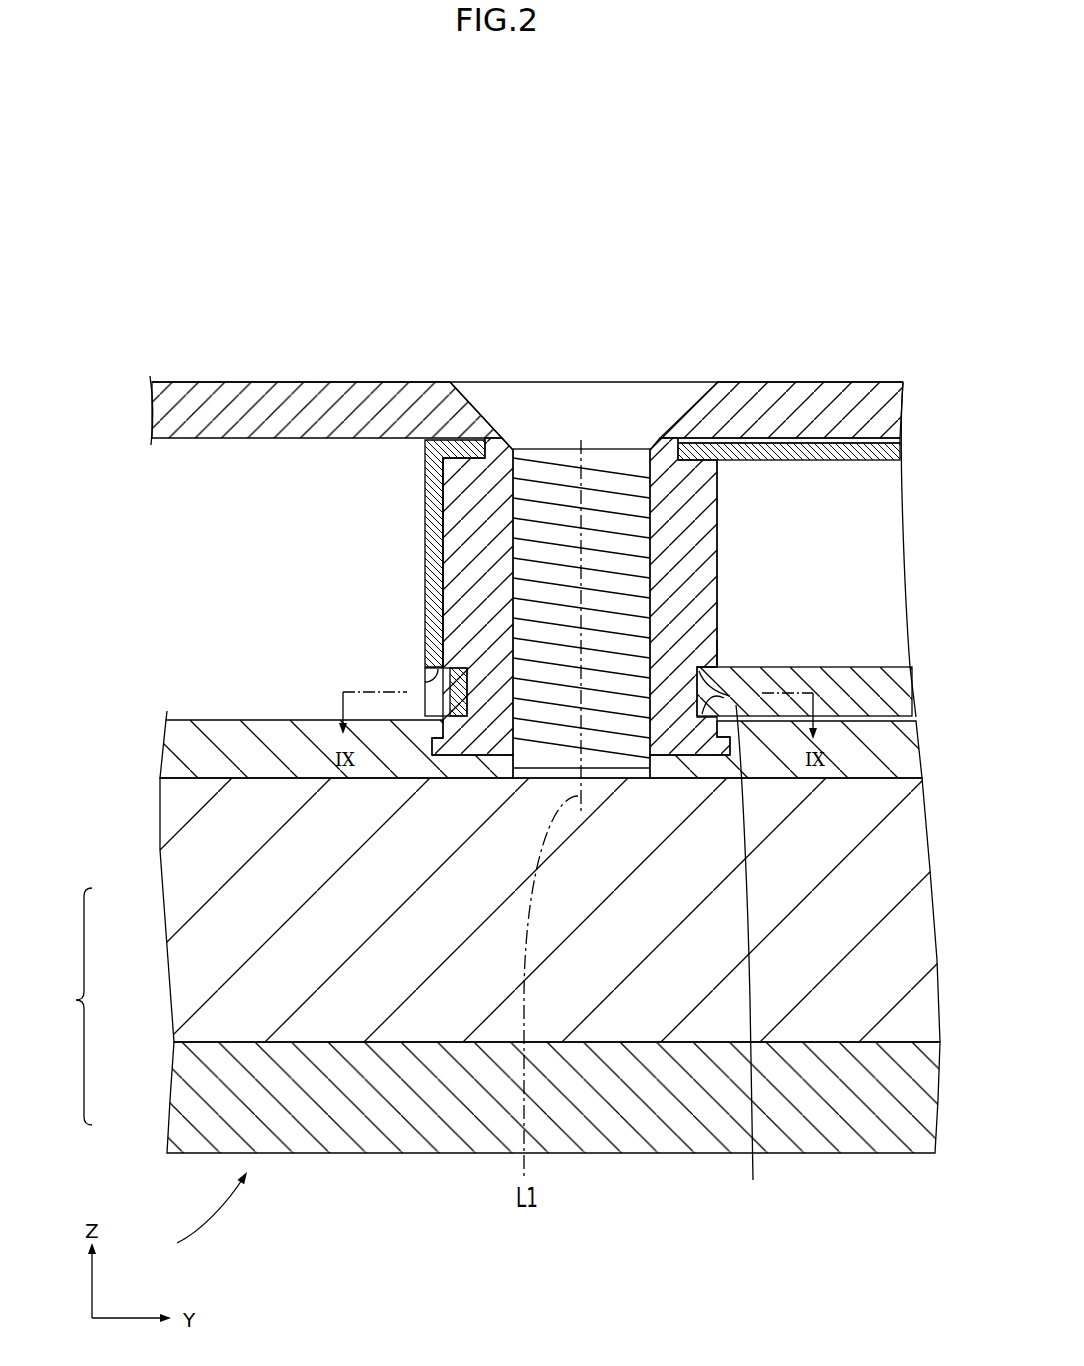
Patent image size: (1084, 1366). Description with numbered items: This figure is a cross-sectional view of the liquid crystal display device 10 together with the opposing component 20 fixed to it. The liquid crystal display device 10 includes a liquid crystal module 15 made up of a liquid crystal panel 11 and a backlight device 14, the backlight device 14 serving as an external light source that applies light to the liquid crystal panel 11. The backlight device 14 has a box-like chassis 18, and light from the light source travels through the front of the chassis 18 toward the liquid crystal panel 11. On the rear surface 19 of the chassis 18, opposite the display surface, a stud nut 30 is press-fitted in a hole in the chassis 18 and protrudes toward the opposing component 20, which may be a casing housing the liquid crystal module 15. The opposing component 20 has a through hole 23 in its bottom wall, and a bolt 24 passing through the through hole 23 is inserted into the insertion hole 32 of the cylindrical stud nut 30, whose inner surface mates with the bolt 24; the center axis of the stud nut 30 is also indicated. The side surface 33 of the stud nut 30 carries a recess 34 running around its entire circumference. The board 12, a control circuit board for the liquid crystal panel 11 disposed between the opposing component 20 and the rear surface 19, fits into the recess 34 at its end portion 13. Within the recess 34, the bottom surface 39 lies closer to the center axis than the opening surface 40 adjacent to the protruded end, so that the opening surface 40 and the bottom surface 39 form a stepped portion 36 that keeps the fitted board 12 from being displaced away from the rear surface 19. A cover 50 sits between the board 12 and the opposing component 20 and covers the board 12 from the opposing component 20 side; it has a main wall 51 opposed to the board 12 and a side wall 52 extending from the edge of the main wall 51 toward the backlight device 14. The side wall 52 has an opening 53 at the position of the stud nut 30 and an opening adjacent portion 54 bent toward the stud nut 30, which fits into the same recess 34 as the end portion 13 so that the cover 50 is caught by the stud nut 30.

The liquid crystal display device 10 is at (197, 1217).
The liquid crystal panel 11 is at (188, 1097).
The board 12 is at (898, 665).
The end portion 13 is at (825, 781).
The backlight device 14 is at (175, 894).
The liquid crystal module 15 is at (84, 1000).
The chassis 18 is at (188, 753).
The rear surface 19 is at (912, 702).
The opposing component 20 is at (253, 413).
The through hole 23 is at (683, 418).
The bolt 24 is at (537, 381).
The stud nut 30 is at (695, 482).
The insertion hole 32 is at (527, 560).
The side surface 33 is at (425, 503).
The recess 34 is at (753, 959).
The stepped portion 36 is at (712, 675).
The bottom surface 39 is at (715, 690).
The opening surface 40 is at (723, 643).
The cover 50 is at (803, 453).
The main wall 51 is at (757, 447).
The side wall 52 is at (425, 570).
The opening 53 is at (425, 683).
The opening adjacent portion 54 is at (470, 690).